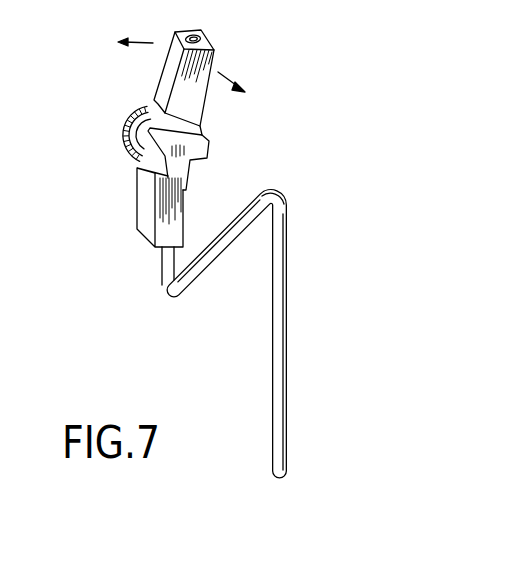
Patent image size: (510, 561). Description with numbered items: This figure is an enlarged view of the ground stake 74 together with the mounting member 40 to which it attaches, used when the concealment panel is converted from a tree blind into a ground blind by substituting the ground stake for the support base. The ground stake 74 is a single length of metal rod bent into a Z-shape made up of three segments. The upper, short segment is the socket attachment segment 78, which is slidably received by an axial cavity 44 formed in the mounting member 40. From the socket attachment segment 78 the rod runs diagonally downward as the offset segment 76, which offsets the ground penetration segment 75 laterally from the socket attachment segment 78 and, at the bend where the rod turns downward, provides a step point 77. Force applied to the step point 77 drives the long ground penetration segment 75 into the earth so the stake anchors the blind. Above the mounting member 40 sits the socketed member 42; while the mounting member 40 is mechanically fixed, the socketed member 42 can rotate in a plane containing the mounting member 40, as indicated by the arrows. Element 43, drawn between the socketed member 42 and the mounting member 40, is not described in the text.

The mounting member 40 is at (147, 211).
The socketed member 42 is at (165, 82).
The bracket 43 is at (207, 160).
The axial cavity 44 is at (198, 38).
The ground stake 74 is at (280, 321).
The ground penetration segment 75 is at (287, 371).
The offset segment 76 is at (218, 256).
The step point 77 is at (268, 189).
The socket attachment segment 78 is at (162, 283).